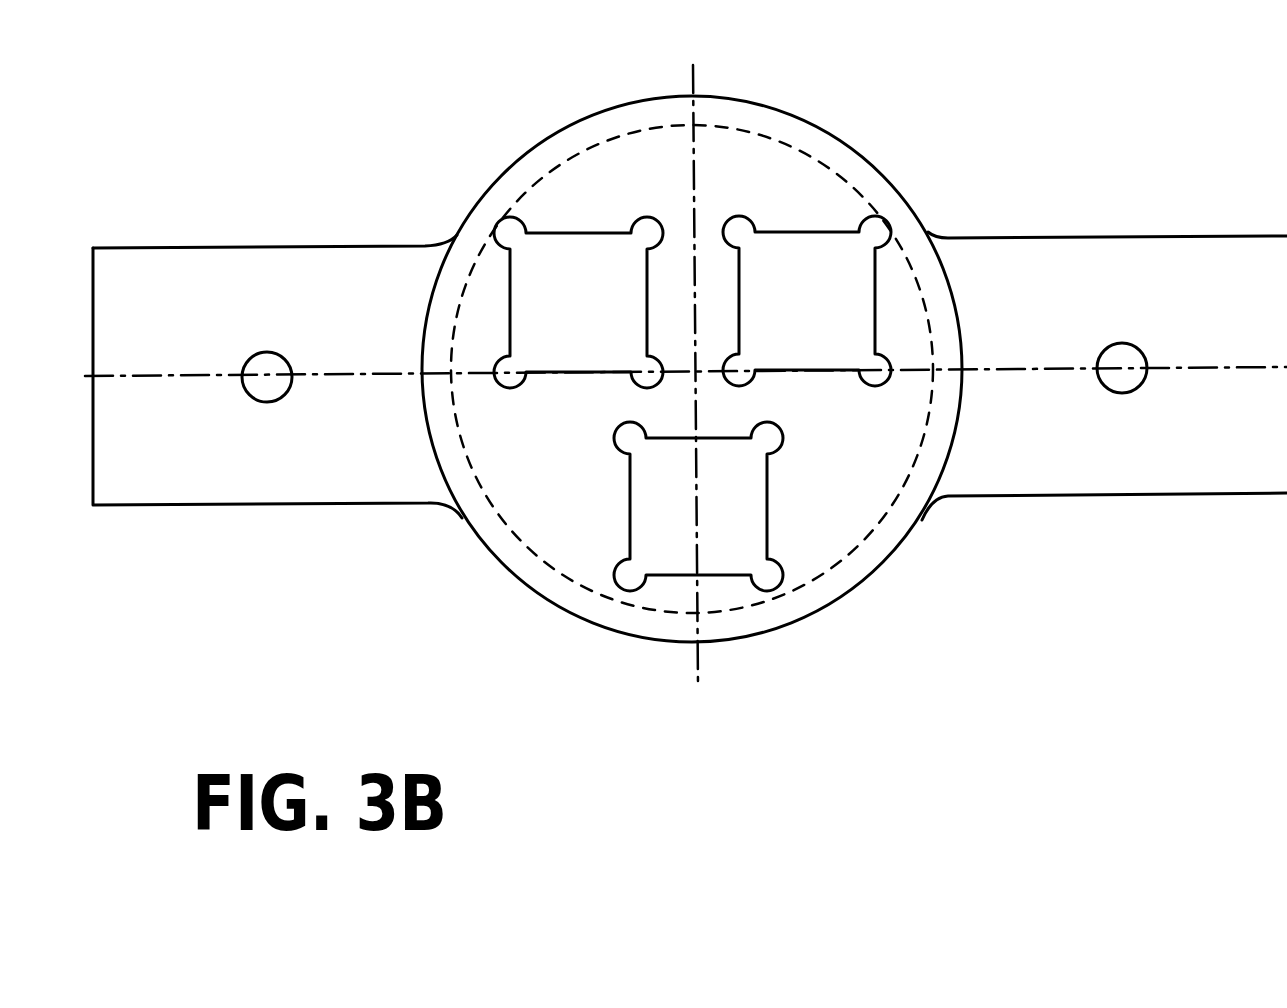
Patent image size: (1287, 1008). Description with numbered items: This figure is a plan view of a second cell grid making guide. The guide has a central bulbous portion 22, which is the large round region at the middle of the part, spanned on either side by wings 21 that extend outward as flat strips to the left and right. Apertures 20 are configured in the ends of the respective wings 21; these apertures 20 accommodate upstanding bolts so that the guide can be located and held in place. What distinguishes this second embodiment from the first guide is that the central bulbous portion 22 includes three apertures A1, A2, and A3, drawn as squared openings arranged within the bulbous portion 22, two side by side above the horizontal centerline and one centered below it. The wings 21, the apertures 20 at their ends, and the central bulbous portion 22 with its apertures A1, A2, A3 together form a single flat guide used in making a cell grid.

The aperture 20 is at (265, 352).
The wing 21 is at (347, 468).
The central bulbous portion 22 is at (543, 137).
The aperture A1 is at (620, 298).
The aperture A2 is at (820, 336).
The aperture A3 is at (640, 505).